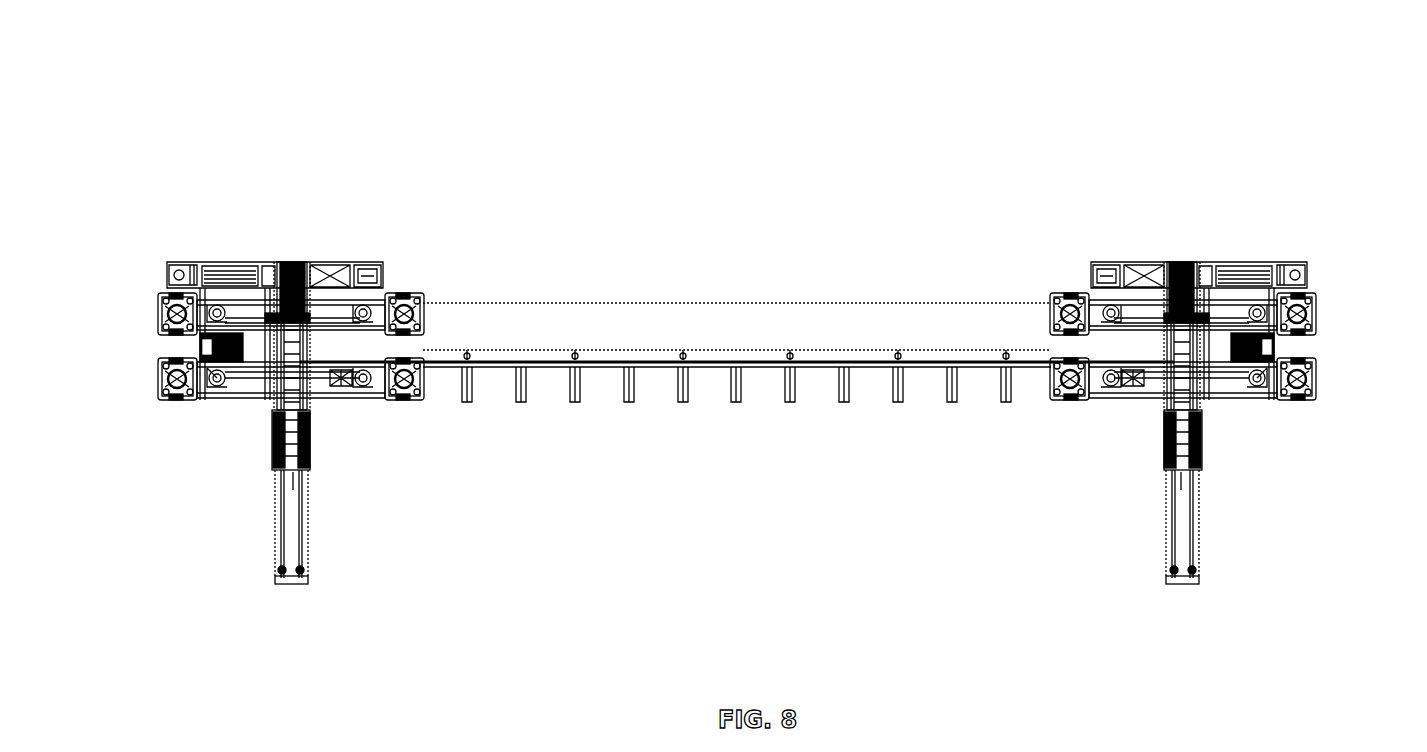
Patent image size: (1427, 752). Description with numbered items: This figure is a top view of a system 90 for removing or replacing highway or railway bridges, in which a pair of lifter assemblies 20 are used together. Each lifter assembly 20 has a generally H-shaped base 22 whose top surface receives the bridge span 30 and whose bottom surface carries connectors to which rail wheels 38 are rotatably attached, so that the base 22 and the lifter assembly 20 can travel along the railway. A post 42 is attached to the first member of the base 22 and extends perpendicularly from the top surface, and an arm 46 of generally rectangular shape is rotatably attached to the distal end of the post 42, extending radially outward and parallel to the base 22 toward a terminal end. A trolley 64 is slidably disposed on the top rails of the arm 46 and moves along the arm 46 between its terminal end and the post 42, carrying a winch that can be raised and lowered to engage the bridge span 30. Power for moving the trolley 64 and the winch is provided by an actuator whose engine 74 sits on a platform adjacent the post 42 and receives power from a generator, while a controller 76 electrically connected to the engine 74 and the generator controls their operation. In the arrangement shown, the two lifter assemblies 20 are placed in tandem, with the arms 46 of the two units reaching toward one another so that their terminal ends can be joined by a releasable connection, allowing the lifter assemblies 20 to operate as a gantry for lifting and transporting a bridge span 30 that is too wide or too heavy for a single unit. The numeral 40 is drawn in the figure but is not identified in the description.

The lifter assembly 20 is at (739, 222).
The base 22 is at (737, 500).
The bridge span 30 is at (737, 223).
The rail wheels 38 is at (737, 518).
The roller carriage 40 is at (737, 513).
The post 42 is at (740, 227).
The arm 46 is at (737, 539).
The trolley 64 is at (737, 569).
The engine 74 is at (735, 166).
The controller 76 is at (738, 518).
The system 90 is at (788, 257).